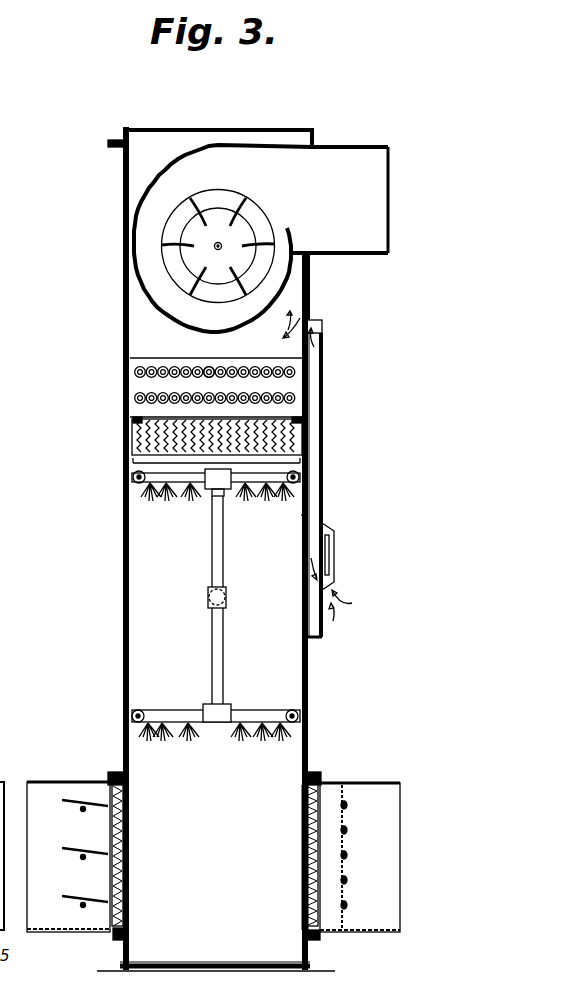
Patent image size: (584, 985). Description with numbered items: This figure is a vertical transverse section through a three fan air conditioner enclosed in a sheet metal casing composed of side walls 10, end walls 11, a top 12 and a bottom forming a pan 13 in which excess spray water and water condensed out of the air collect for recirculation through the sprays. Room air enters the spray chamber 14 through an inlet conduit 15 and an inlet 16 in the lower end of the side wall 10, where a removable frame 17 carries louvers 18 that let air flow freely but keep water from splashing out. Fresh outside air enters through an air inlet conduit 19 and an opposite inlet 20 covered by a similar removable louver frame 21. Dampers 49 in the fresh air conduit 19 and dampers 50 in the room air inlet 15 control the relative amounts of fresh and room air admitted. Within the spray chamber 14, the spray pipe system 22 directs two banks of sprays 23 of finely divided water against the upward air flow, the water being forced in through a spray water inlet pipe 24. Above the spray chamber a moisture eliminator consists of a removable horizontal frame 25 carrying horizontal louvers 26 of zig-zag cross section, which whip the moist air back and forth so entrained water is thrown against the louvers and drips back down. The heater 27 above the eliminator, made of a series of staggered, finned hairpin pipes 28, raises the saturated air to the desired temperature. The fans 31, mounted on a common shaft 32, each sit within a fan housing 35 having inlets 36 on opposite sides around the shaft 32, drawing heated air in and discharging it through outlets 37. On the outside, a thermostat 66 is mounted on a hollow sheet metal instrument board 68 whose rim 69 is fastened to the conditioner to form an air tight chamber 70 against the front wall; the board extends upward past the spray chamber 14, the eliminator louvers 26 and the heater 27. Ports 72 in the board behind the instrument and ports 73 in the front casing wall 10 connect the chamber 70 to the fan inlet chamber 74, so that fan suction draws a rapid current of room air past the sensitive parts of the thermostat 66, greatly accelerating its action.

The side walls 10 is at (123, 613).
The end walls 11 is at (209, 878).
The top 12 is at (205, 127).
The pan 13 is at (220, 968).
The spray chamber 14 is at (179, 644).
The inlet conduit 15 is at (375, 783).
The inlet 16 is at (302, 847).
The removable frame 17 is at (304, 922).
The louvers 18 is at (312, 875).
The air inlet conduit 19 is at (68, 873).
The inlet 20 is at (125, 846).
The removable louver frame 21 is at (110, 923).
The spray pipe system 22 is at (212, 549).
The sprays 23 is at (188, 498).
The spray water inlet pipe 24 is at (208, 604).
The removable horizontal frame 25 is at (132, 441).
The horizontal louvers 26 is at (153, 444).
The heater 27 is at (155, 358).
The hairpin pipes 28 is at (203, 366).
The fans 31 is at (240, 205).
The shaft 32 is at (215, 249).
The fan housing 35 is at (183, 153).
The inlets 36 is at (218, 246).
The outlets 37 is at (339, 200).
The dampers 49 is at (62, 852).
The dampers 50 is at (344, 888).
The thermostat 66 is at (331, 526).
The instrument board 68 is at (323, 387).
The rim 69 is at (316, 321).
The air tight chamber 70 is at (312, 427).
The ports 72 is at (325, 578).
The ports 73 is at (316, 333).
The fan inlet chamber 74 is at (279, 329).